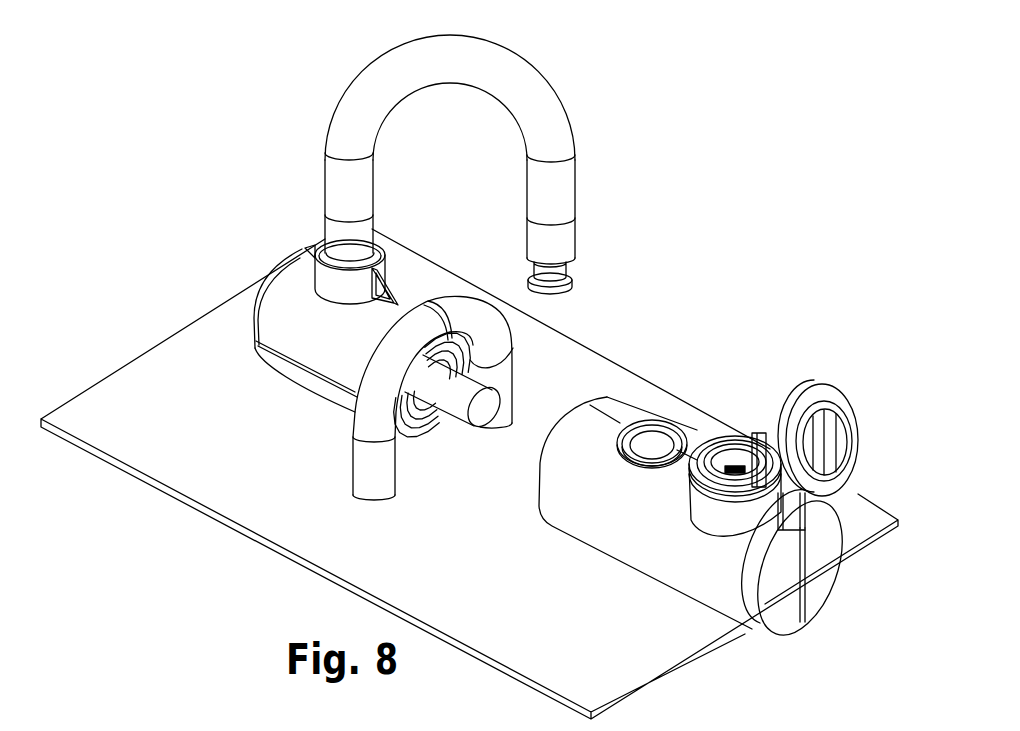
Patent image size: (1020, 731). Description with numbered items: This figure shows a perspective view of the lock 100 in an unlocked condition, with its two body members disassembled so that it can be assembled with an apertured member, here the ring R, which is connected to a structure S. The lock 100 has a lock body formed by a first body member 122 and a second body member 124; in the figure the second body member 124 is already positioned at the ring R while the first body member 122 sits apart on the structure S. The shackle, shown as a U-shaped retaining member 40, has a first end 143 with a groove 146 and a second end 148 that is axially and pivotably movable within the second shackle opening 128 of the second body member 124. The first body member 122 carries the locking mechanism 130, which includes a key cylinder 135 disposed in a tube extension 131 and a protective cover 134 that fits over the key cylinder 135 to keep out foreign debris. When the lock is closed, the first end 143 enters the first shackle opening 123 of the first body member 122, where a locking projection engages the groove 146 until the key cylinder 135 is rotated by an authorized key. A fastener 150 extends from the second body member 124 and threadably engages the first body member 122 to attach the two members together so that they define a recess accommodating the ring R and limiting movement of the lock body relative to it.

The lock 100 is at (312, 85).
The U-shaped tube 40 is at (505, 68).
The first end 143 is at (558, 236).
The groove 146 is at (573, 277).
The second end 148 is at (400, 216).
The second shackle opening 128 is at (296, 206).
The second body member 124 is at (285, 312).
The fastener 150 is at (470, 389).
The ring R is at (353, 410).
The structure S is at (550, 643).
The locking mechanism 130 is at (777, 380).
The first body member 122 is at (750, 637).
The first shackle opening 123 is at (650, 432).
The tube extension 131 is at (733, 440).
The key cylinder 135 is at (729, 465).
The protective cover 134 is at (828, 398).